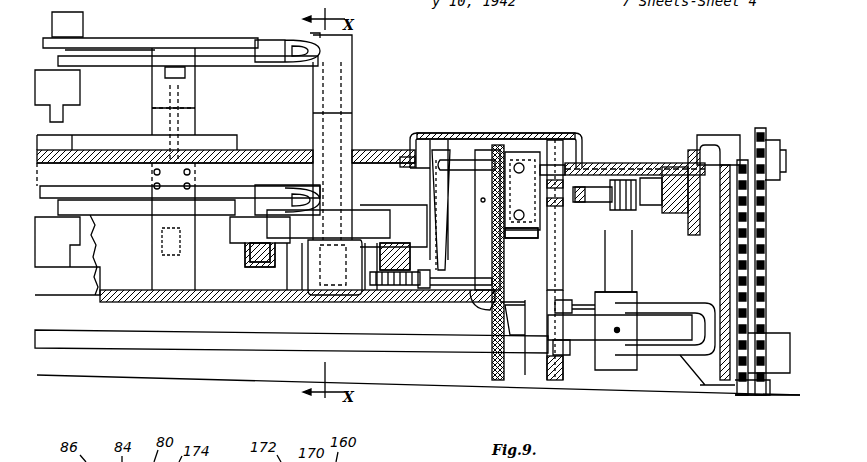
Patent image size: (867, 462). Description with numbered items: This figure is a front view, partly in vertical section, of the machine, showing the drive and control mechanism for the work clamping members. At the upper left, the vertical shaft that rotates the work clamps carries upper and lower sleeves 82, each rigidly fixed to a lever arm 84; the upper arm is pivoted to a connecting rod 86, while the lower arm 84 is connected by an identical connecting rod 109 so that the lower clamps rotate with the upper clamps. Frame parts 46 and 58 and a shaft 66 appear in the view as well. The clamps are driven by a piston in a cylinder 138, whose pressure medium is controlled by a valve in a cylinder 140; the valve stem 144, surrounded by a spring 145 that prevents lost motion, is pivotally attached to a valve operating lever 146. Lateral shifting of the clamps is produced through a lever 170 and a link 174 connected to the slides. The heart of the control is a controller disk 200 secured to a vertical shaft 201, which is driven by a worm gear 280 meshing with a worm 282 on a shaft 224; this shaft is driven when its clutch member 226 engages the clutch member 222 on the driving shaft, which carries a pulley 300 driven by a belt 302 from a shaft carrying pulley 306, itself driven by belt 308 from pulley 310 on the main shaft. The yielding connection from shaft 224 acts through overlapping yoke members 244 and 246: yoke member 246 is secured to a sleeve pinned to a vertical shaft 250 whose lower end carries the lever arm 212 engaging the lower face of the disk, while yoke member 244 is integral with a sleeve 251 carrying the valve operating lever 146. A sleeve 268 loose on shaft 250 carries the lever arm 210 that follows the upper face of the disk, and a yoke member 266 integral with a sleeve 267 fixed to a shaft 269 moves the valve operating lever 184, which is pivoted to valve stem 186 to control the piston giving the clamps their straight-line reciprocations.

The frame member 46 is at (79, 26).
The frame bracket 58 is at (78, 240).
The shaft 66 is at (155, 336).
The sleeve 82 is at (352, 80).
The lever arm 84 is at (322, 53).
The connecting rod 86 is at (226, 48).
The connecting rod 109 is at (213, 198).
The cylinder 138 is at (230, 235).
The valve cylinder 140 is at (310, 300).
The valve stem 144 is at (386, 300).
The spring 145 is at (375, 295).
The valve operating lever 146 is at (427, 215).
The lever 170 is at (188, 75).
The link 174 is at (97, 62).
The valve operating lever 184 is at (504, 262).
The valve stem 186 is at (512, 300).
The controller disk 200 is at (631, 331).
The vertical shaft 201 is at (632, 270).
The lever arm 210 is at (568, 298).
The lever arm 212 is at (563, 368).
The clutch member 222 is at (694, 235).
The shaft 224 is at (590, 163).
The clutch member 226 is at (680, 213).
The yoke member 244 is at (478, 150).
The yoke member 246 is at (530, 152).
The vertical shaft 250 is at (563, 262).
The sleeve 251 is at (432, 190).
The yoke member 266 is at (518, 238).
The sleeve 267 is at (455, 145).
The sleeve 268 is at (563, 246).
The shaft 269 is at (478, 318).
The worm gear 280 is at (580, 202).
The worm 282 is at (625, 210).
The pulley 300 is at (742, 160).
The belt 302 is at (748, 262).
The pulley 306 is at (760, 380).
The belt 308 is at (762, 288).
The pulley 310 is at (760, 128).